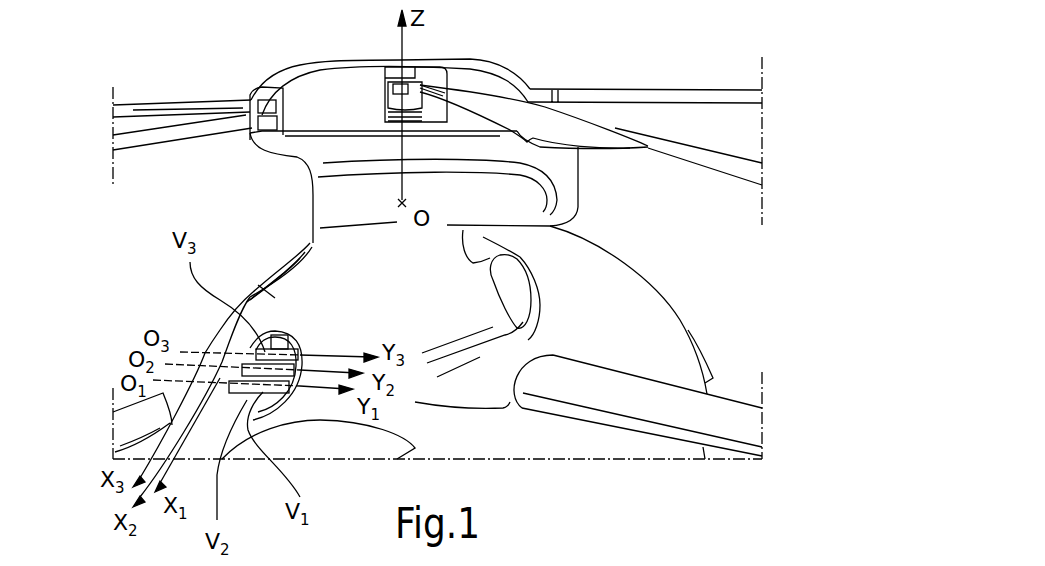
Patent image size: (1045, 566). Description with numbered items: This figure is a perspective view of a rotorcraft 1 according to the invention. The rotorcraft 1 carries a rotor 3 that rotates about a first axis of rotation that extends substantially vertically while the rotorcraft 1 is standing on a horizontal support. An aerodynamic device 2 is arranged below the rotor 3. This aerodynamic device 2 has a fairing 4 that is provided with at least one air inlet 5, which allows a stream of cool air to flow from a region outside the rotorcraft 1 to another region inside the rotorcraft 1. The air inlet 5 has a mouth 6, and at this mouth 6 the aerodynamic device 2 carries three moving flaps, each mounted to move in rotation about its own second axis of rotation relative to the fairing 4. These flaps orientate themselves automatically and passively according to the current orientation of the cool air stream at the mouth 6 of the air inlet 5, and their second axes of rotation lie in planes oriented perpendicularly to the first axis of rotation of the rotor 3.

The rotorcraft 1 is at (667, 250).
The aerodynamic device 2 is at (263, 268).
The rotor 3 is at (570, 67).
The fairing 4 is at (238, 330).
The air inlet 5 is at (252, 408).
The mouth 6 is at (283, 340).